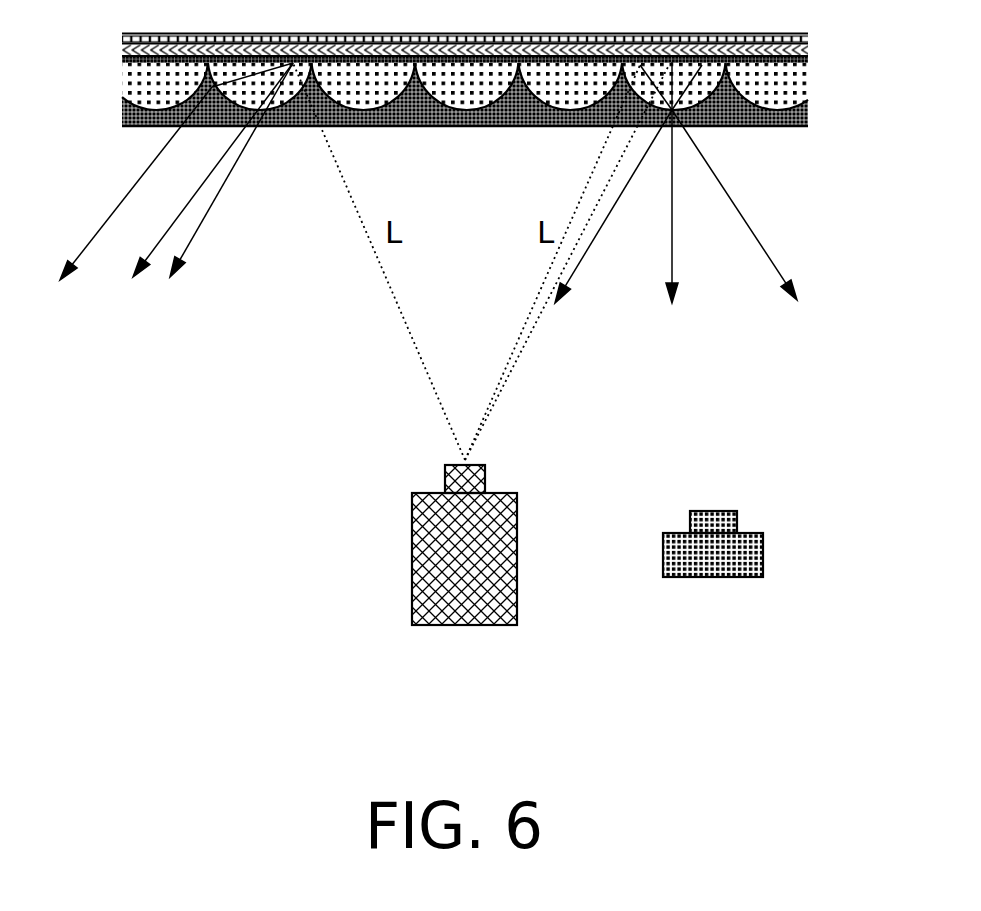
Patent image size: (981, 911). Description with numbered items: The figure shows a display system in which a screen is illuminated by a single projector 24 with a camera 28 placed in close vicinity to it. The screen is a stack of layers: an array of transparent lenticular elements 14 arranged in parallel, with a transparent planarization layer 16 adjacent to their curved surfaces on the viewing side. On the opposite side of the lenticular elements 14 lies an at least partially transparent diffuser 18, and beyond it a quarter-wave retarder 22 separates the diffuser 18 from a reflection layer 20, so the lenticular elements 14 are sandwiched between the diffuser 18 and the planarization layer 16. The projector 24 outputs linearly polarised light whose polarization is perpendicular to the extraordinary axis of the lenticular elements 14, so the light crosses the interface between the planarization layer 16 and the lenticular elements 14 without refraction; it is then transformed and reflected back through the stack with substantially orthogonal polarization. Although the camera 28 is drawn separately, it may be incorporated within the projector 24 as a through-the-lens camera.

The lenticular elements 14 is at (127, 85).
The planarization layer 16 is at (127, 112).
The diffuser 18 is at (808, 60).
The reflection layer 20 is at (122, 50).
The quarter-wave retarder 22 is at (808, 38).
The projector 24 is at (412, 557).
The camera 28 is at (713, 577).